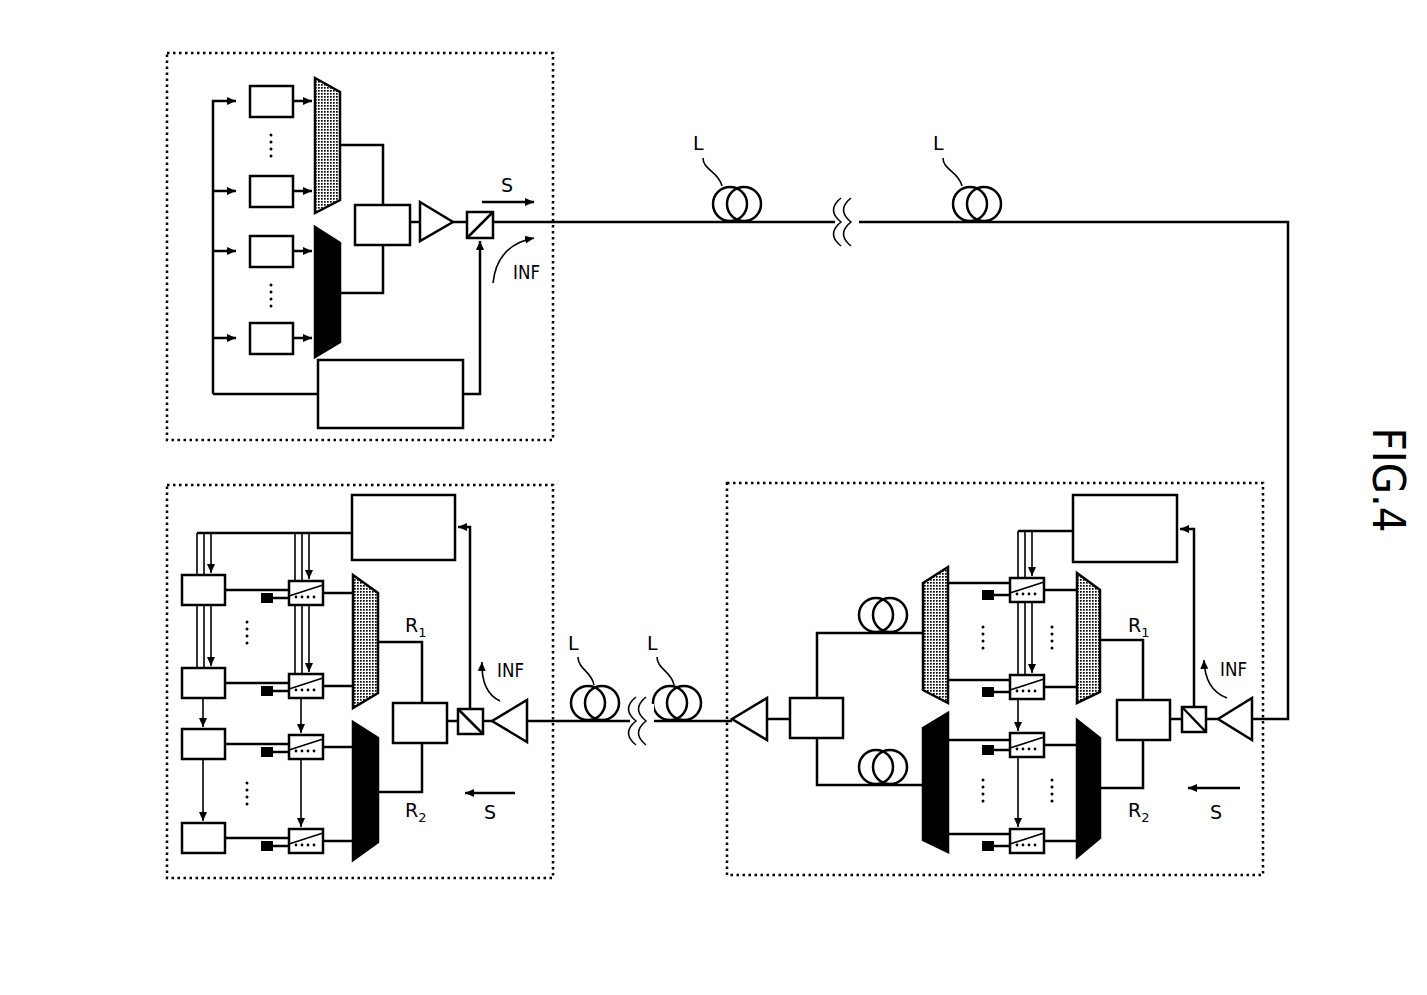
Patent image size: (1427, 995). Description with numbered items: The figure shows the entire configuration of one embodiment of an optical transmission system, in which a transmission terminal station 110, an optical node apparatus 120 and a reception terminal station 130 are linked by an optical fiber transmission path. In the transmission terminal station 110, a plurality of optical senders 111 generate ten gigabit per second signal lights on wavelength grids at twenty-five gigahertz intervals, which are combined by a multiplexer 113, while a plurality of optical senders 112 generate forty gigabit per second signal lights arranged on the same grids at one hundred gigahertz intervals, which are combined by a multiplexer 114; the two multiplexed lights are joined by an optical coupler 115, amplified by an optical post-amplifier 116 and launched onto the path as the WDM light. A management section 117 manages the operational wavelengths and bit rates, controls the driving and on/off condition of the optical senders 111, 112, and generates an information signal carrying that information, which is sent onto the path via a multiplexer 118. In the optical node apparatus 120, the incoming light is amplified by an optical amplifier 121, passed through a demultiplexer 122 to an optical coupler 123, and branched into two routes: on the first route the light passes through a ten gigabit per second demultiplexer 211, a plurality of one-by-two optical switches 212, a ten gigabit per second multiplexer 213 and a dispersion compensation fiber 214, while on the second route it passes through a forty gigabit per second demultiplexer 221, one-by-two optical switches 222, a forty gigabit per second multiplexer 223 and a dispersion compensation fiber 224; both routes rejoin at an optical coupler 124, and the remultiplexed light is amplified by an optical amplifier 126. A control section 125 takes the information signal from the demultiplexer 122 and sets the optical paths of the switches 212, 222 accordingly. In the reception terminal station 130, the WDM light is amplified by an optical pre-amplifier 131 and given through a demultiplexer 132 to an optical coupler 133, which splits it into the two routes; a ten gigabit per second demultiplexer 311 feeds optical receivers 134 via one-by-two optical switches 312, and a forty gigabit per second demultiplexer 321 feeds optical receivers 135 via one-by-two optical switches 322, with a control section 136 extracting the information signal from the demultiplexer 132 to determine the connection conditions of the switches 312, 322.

The transmission terminal station 110 is at (360, 234).
The optical senders 111 is at (262, 178).
The optical senders 112 is at (262, 330).
The multiplexer 113 is at (340, 109).
The multiplexer 114 is at (341, 311).
The optical coupler 115 is at (400, 205).
The optical post-amplifier 116 is at (449, 195).
The management section 117 is at (405, 360).
The multiplexer 118 is at (471, 240).
The optical node apparatus 120 is at (995, 665).
The optical amplifier 121 is at (1236, 736).
The demultiplexer 122 is at (1191, 733).
The optical coupler 123 is at (1150, 700).
The optical coupler 124 is at (805, 698).
The control section 125 is at (1145, 562).
The optical amplifier 126 is at (758, 706).
The reception terminal station 130 is at (360, 668).
The optical pre-amplifier 131 is at (510, 738).
The demultiplexer 132 is at (468, 735).
The optical coupler 133 is at (428, 703).
The optical receivers 134 is at (182, 592).
The optical receivers 135 is at (182, 745).
The control section 136 is at (425, 560).
The 10 Gbit/s demultiplexer 211 is at (1100, 614).
The 1×2 optical switches 212 is at (999, 572).
The 10 Gbit/s multiplexer 213 is at (936, 575).
The 10 Gbit/s dispersion compensation fiber 214 is at (882, 637).
The 40 Gbit/s demultiplexer 221 is at (1100, 827).
The 1×2 optical switches 222 is at (998, 738).
The 40 Gbit/s multiplexer 223 is at (922, 815).
The 40 Gbit/s dispersion compensation fiber 224 is at (882, 789).
The 10 Gbit/s demultiplexer 311 is at (378, 613).
The 1×2 optical switches 312 is at (281, 562).
The 40 Gbit/s demultiplexer 321 is at (378, 829).
The 1×2 optical switches 322 is at (279, 740).